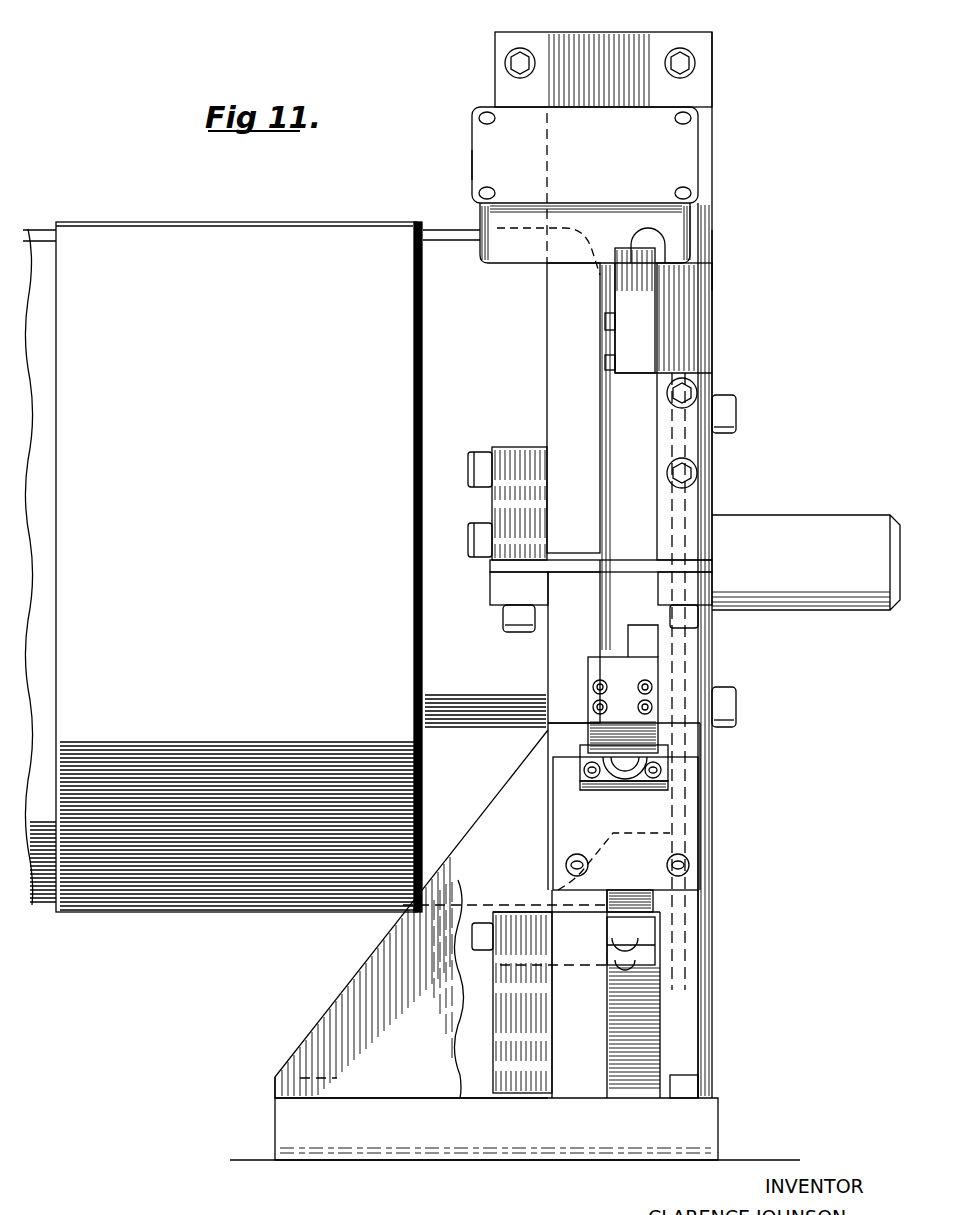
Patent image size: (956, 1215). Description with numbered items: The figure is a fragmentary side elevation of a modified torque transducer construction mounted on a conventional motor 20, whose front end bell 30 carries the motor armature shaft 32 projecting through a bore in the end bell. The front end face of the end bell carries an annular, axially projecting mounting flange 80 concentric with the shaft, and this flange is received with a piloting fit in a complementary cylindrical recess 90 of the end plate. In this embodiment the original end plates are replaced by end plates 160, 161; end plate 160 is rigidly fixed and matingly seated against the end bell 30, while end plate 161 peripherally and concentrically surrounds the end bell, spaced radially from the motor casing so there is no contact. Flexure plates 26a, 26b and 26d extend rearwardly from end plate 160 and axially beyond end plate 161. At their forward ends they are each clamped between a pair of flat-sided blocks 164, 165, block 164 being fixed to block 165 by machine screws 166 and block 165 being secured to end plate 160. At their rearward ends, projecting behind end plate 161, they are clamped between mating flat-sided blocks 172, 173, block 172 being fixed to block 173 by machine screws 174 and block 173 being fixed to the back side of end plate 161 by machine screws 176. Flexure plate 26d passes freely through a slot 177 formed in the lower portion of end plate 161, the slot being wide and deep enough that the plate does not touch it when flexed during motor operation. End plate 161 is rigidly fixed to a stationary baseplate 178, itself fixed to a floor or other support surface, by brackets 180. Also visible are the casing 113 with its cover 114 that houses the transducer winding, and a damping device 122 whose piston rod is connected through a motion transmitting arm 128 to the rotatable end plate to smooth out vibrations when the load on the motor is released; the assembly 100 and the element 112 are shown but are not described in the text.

The motor 20 is at (277, 212).
The front end bell 30 is at (447, 229).
The motor armature shaft 32 is at (804, 515).
The flexure plate 26a is at (632, 560).
The flexure plate 26b is at (647, 33).
The flexure plate 26d is at (653, 967).
The annular mounting flange 80 is at (717, 345).
The cylindrical recess 90 is at (672, 410).
The mounting assembly 100 is at (491, 92).
The shaft 112 is at (655, 281).
The casing 113 is at (495, 265).
The cover 114 is at (637, 139).
The damping device 122 is at (703, 800).
The motion transmitting arm 128 is at (660, 660).
The end plate 160 is at (713, 258).
The end plate 161 is at (547, 340).
The clamping block 164 is at (698, 582).
The clamping block 165 is at (705, 450).
The machine screws 166 is at (698, 60).
The clamping block 172 is at (512, 32).
The clamping block 173 is at (515, 447).
The machine screws 174 is at (527, 52).
The machine screws 176 is at (468, 537).
The slot 177 is at (600, 573).
The stationary baseplate 178 is at (275, 1126).
The bracket 180 is at (350, 980).